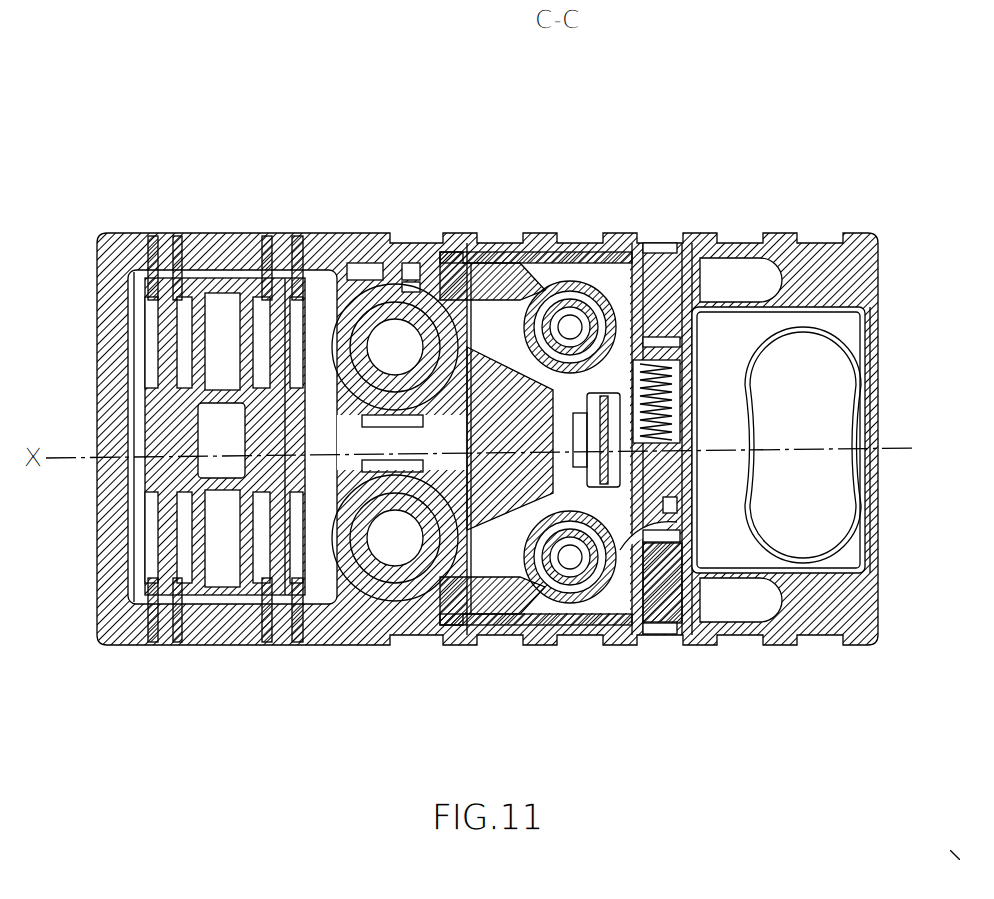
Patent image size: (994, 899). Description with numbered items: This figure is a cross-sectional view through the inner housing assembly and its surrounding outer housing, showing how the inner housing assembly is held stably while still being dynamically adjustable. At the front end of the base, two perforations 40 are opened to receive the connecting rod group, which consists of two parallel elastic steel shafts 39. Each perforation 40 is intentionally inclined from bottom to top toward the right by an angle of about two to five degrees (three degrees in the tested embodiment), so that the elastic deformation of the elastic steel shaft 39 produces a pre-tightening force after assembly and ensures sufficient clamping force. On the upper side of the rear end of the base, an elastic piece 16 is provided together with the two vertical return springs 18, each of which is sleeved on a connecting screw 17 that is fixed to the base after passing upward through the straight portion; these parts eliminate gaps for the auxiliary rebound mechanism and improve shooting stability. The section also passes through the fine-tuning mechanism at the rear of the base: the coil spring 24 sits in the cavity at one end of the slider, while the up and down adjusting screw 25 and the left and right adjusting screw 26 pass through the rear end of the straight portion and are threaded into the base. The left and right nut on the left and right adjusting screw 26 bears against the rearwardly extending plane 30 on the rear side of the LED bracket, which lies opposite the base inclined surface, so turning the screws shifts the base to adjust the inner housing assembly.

The elastic piece 16 is at (592, 255).
The connecting screw 17 is at (572, 262).
The vertical return spring 18 is at (521, 240).
The coil spring 24 is at (697, 330).
The up and down adjusting screw 25 is at (660, 275).
The left and right adjusting screw 26 is at (657, 590).
The rearwardly extending plane 30 is at (617, 587).
The elastic steel shaft 39 is at (280, 335).
The perforation 40 is at (292, 397).